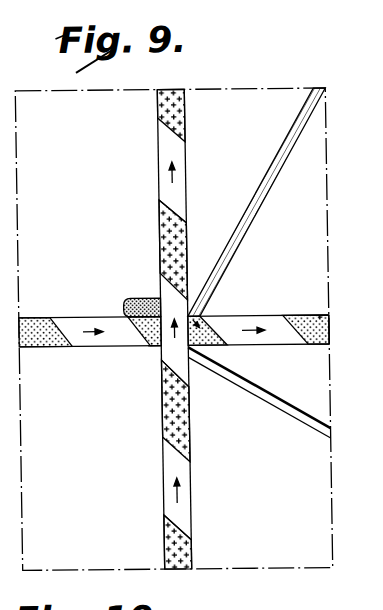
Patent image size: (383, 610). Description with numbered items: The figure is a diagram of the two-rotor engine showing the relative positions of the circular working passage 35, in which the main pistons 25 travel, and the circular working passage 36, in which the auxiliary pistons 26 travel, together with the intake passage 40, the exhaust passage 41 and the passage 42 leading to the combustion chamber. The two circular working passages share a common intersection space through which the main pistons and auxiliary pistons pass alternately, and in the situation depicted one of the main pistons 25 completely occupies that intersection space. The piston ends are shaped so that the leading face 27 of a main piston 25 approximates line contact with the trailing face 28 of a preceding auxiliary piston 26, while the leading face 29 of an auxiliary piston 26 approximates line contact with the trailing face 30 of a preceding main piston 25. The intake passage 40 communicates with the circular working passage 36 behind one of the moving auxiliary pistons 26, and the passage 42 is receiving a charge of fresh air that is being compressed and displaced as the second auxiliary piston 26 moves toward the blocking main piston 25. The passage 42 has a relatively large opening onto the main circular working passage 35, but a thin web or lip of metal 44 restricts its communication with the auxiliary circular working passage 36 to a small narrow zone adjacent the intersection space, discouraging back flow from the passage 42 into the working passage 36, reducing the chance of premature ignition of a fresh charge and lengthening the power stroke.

The main piston 25 is at (158, 172).
The auxiliary piston 26 is at (79, 325).
The leading face of main piston 27 is at (180, 133).
The trailing face of auxiliary piston 28 is at (58, 343).
The leading face of auxiliary piston 29 is at (129, 316).
The trailing face of main piston 30 is at (164, 206).
The circular working passage 35 is at (162, 91).
The circular working passage 36 is at (328, 318).
The intake passage 40 is at (247, 214).
The exhaust passage 41 is at (257, 387).
The passage to combustion chamber 42 is at (141, 299).
The lip 44 is at (159, 348).